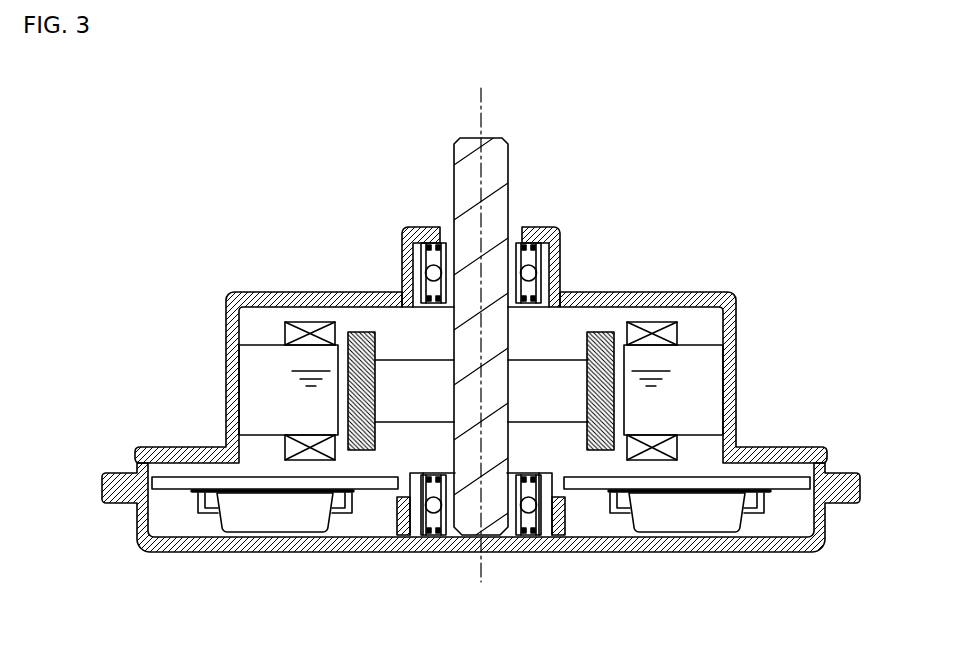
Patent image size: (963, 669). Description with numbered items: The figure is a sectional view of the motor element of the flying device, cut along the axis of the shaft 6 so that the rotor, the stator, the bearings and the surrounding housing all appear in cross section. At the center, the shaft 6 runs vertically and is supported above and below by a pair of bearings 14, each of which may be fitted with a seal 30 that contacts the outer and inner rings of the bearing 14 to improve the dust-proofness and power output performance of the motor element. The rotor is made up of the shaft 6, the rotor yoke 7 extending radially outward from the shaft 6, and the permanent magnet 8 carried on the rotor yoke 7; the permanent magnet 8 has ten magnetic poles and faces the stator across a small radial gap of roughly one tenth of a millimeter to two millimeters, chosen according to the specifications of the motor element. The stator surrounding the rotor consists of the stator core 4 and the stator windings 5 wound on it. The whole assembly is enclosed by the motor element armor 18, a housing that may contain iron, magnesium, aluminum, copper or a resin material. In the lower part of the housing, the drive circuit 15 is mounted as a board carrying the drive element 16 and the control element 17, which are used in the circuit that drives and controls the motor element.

The stator core 4 is at (707, 393).
The stator windings 5 is at (670, 333).
The shaft 6 is at (496, 163).
The rotor yoke 7 is at (425, 375).
The permanent magnet 8 is at (360, 353).
The bearing 14 is at (558, 253).
The drive circuit 15 is at (182, 481).
The drive element 16 is at (688, 508).
The control element 17 is at (272, 508).
The motor element armor 18 is at (160, 447).
The seal 30 is at (436, 240).